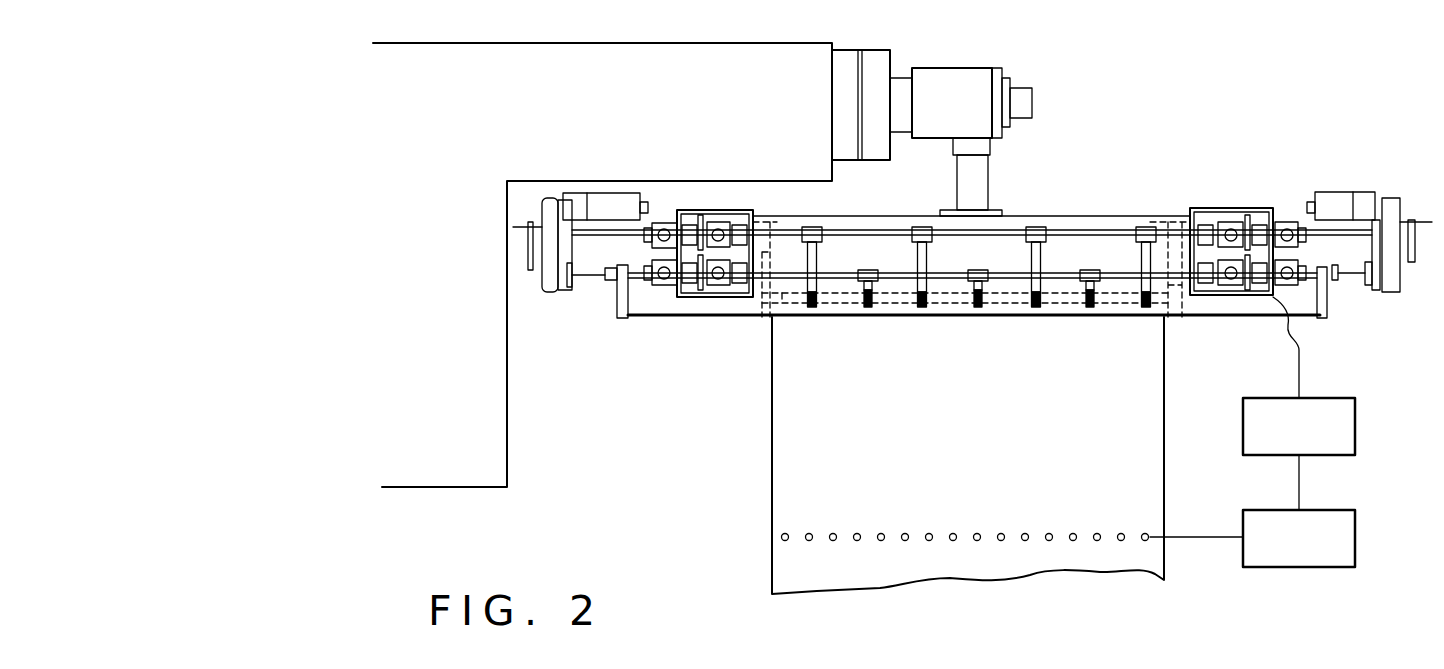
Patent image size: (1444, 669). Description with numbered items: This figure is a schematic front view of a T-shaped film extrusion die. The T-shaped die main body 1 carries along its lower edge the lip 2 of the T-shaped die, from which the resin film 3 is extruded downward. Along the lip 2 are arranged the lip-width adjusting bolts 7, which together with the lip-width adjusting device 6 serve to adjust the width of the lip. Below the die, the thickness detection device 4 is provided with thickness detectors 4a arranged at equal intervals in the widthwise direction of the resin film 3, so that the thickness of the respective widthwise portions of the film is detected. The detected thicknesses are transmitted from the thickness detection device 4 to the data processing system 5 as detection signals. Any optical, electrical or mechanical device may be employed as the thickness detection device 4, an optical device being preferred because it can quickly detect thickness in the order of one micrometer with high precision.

The T-shaped die main body 1 is at (1146, 213).
The lip of the T-shaped die 2 is at (841, 311).
The resin film 3 is at (1150, 478).
The thickness detection device 4 is at (1355, 545).
The thickness detectors 4a is at (785, 537).
The data processing system 5 is at (1355, 443).
The lip-width adjusting device 6 is at (1010, 232).
The lip-width adjusting bolts 7 is at (873, 310).